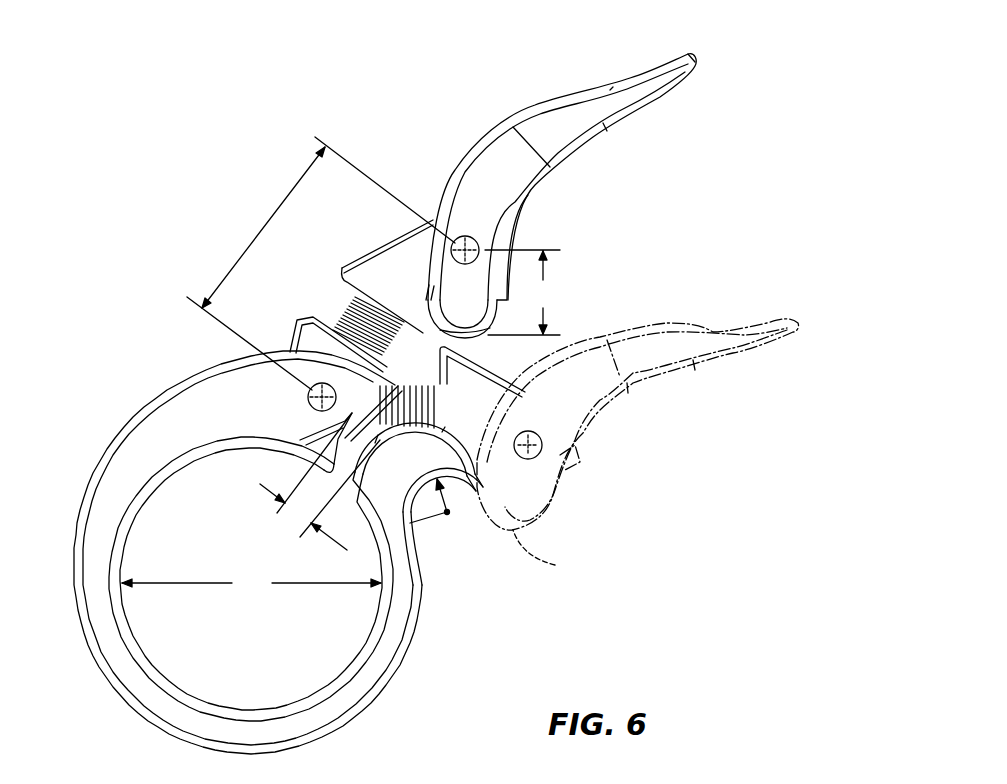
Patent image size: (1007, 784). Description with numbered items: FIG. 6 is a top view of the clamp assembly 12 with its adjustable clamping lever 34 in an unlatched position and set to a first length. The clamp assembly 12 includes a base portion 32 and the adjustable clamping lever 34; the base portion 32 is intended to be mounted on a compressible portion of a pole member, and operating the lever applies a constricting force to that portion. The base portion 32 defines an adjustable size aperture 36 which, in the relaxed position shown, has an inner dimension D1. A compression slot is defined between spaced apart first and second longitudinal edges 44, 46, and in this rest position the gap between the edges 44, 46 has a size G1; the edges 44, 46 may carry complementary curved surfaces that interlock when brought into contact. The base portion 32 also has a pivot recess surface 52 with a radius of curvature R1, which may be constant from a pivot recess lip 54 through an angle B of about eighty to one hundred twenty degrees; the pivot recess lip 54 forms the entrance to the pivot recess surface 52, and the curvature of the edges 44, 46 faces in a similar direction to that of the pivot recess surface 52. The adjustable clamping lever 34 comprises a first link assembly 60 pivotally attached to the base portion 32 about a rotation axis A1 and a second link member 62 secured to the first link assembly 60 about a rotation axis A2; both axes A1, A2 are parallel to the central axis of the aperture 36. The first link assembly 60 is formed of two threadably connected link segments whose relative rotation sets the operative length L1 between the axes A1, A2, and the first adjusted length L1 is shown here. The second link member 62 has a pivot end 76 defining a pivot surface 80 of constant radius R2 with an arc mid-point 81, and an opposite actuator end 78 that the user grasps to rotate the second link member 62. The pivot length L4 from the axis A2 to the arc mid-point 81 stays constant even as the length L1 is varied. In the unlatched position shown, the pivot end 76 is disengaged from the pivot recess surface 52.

The clamp assembly 12 is at (783, 205).
The base portion 32 is at (95, 466).
The adjustable clamping lever 34 is at (430, 198).
The adjustable size aperture 36 is at (140, 546).
The first longitudinal edge 44 is at (376, 445).
The second longitudinal edge 46 is at (347, 420).
The pivot recess surface 52 is at (427, 476).
The pivot recess lip 54 is at (473, 473).
The first link assembly 60 is at (345, 255).
The second link member 62 is at (601, 184).
The pivot end 76 is at (552, 509).
The actuator end 78 is at (700, 58).
The pivot surface 80 is at (548, 552).
The arc mid-point 81 is at (463, 265).
The rotation axis A1 is at (308, 397).
The rotation axis A2 is at (478, 247).
The angle β B is at (450, 515).
The dimension D1 is at (251, 584).
The gap size G1 is at (315, 481).
The operative length L1 is at (321, 263).
The pivot length L4 is at (522, 292).
The radius of curvature R1 is at (447, 512).
The constant radius R2 is at (466, 322).